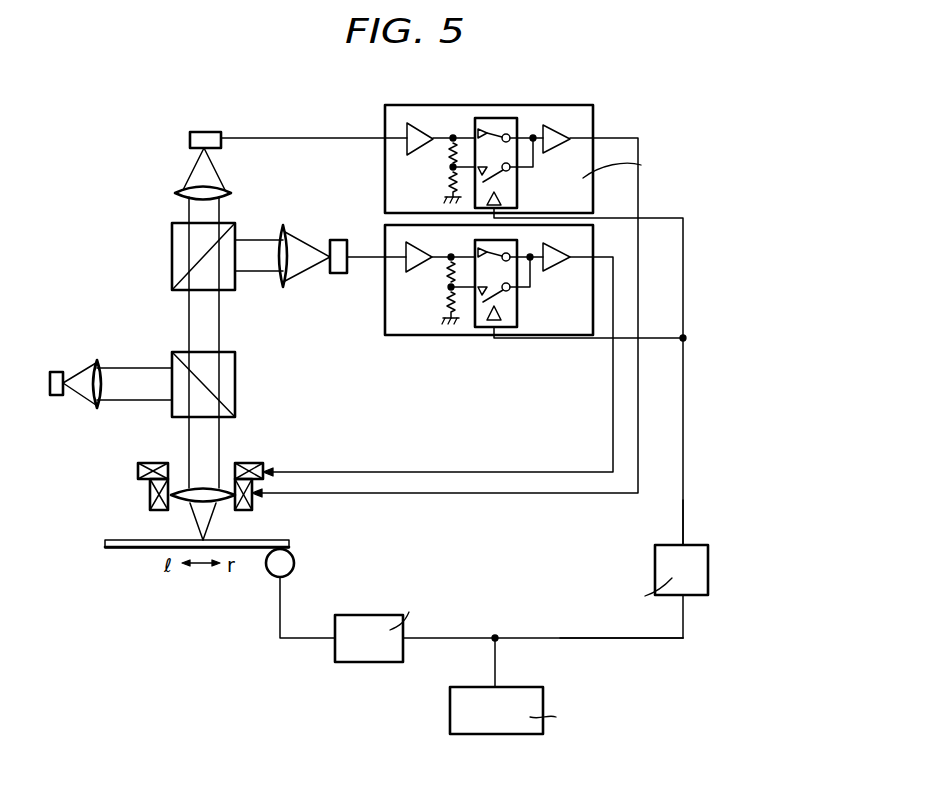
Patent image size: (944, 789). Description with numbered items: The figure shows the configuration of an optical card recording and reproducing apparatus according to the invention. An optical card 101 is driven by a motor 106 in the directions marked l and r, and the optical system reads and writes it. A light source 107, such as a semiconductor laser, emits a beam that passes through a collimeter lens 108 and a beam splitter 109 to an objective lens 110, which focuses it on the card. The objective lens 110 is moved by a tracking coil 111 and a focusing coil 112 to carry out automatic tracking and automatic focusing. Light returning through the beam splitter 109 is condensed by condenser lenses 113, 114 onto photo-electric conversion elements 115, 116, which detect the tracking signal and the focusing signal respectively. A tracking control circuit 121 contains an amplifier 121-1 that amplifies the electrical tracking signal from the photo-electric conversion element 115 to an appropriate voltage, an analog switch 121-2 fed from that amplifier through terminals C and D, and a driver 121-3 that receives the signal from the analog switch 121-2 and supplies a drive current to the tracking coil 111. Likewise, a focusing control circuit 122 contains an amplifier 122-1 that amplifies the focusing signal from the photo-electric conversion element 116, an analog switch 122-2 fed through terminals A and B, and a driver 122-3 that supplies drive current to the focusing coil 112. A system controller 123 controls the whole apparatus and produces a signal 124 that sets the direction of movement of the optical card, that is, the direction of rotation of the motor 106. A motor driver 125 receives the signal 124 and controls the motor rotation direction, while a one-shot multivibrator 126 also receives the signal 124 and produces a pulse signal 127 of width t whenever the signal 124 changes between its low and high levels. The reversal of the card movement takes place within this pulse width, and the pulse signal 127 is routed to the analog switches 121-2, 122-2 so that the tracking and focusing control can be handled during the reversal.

The optical card 101 is at (108, 548).
The motor 106 is at (295, 565).
The light source 107 is at (63, 395).
The collimeter lens 108 is at (104, 396).
The beam splitter 109 is at (172, 236).
The objective lens 110 is at (200, 483).
The tracking coil 111 is at (255, 463).
The focusing coil 112 is at (252, 505).
The condenser lens 113 is at (288, 225).
The condenser lens 114 is at (179, 186).
The photo-electric conversion element 115 is at (339, 240).
The photo-electric conversion element 116 is at (211, 132).
The tracking control circuit 121 is at (415, 335).
The amplifier 121-1 is at (405, 268).
The analog switch 121-2 is at (517, 312).
The driver 121-3 is at (560, 271).
The focusing control circuit 122 is at (396, 105).
The amplifier 122-1 is at (427, 124).
The analog switch 122-2 is at (523, 196).
The driver 122-3 is at (565, 128).
The system controller 123 is at (543, 700).
The signal 124 is at (600, 638).
The motor driver 125 is at (390, 663).
The one-shot multivibrator 126 is at (655, 558).
The signal 127 is at (682, 517).